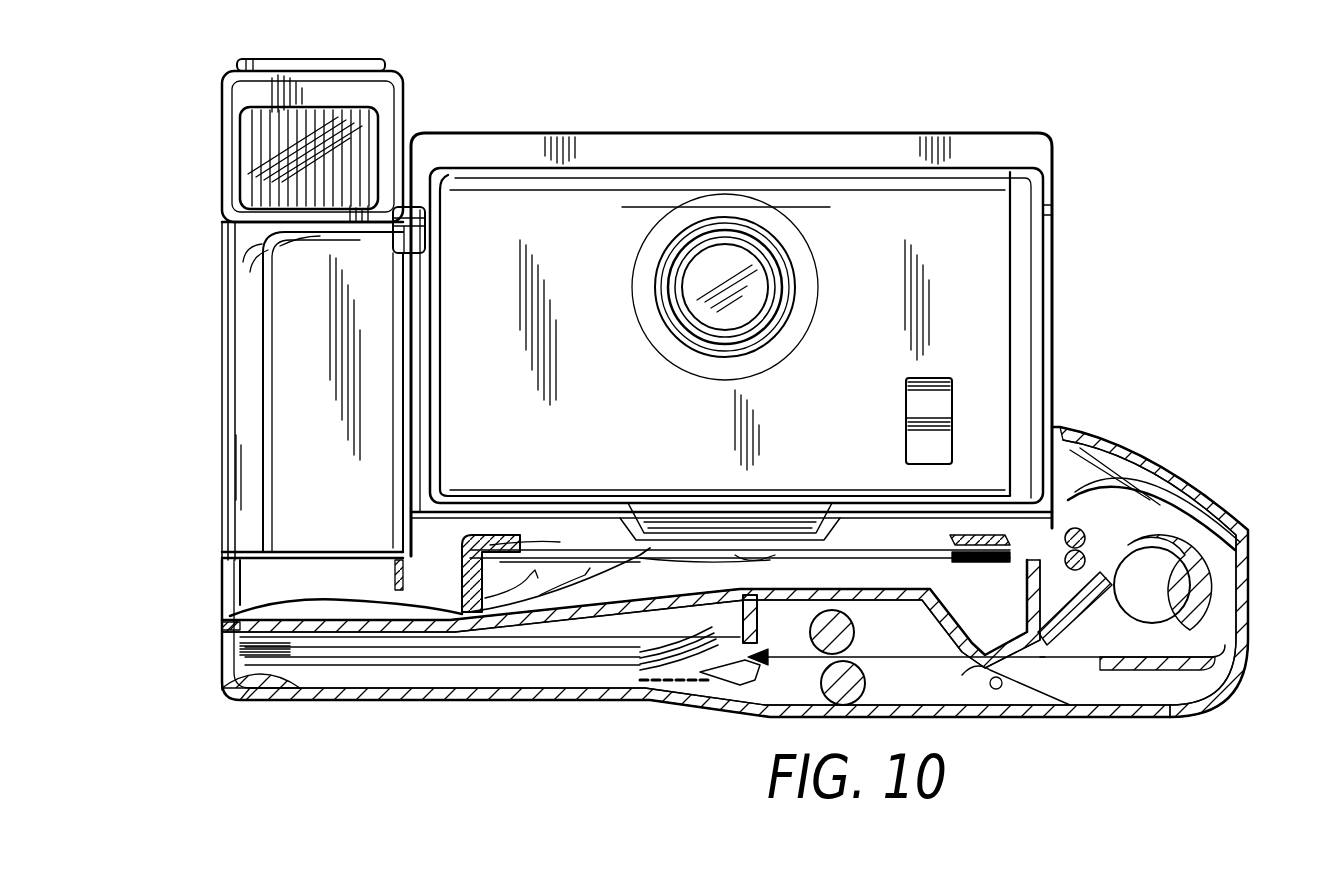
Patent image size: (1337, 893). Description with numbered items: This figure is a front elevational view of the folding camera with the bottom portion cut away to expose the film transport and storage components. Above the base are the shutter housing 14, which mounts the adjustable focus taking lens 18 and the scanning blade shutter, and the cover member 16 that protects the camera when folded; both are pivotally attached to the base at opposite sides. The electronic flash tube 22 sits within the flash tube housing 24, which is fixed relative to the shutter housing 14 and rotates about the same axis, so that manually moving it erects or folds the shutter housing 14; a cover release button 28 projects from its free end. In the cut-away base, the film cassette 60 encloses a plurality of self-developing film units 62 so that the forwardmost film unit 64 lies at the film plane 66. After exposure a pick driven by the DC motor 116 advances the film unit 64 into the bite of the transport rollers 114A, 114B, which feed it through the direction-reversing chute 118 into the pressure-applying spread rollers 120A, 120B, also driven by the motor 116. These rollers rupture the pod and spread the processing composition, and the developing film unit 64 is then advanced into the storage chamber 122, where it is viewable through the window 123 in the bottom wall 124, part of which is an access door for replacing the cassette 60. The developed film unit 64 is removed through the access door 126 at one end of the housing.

The shutter housing 14 is at (985, 322).
The cover member 16 is at (866, 133).
The taking lens 18 is at (752, 300).
The electronic flash tube 22 is at (265, 137).
The flash tube housing 24 is at (243, 277).
The cover release button 28 is at (338, 58).
The film cassette 60 is at (470, 556).
The self-developing film units 62 is at (470, 572).
The forwardmost film unit 64 is at (540, 548).
The film plane 66 is at (870, 548).
The transport roller 114A is at (1083, 523).
The transport roller 114B is at (1085, 555).
The DC motor 116 is at (1165, 547).
The direction-reversing chute 118 is at (1218, 585).
The pressure-applying spread roller 120A is at (852, 634).
The pressure-applying spread roller 120B is at (865, 686).
The storage chamber 122 is at (372, 680).
The window 123 is at (470, 690).
The bottom wall 124 is at (660, 700).
The access door 126 is at (250, 690).